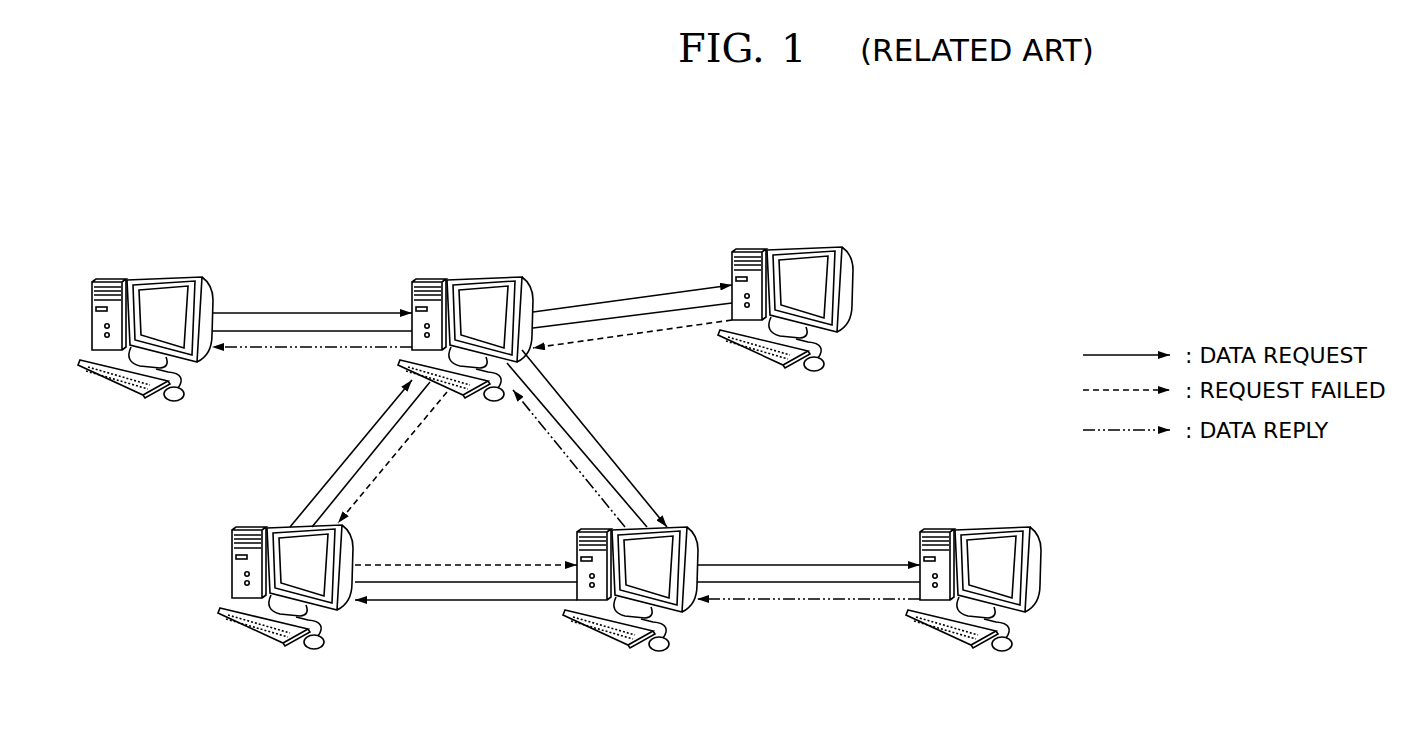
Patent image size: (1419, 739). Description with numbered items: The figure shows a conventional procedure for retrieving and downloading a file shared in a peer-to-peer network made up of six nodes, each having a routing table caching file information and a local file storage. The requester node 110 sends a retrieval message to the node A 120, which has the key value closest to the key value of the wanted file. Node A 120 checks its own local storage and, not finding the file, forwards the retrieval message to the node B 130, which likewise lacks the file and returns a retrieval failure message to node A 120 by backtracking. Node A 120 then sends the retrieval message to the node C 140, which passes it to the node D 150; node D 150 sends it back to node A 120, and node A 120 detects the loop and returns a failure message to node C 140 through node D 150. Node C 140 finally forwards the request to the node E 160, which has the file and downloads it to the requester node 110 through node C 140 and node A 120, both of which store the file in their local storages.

The requester node 110 is at (167, 275).
The node A 120 is at (488, 275).
The node B 130 is at (807, 245).
The node C 140 is at (670, 526).
The node D 150 is at (232, 557).
The node E 160 is at (997, 526).